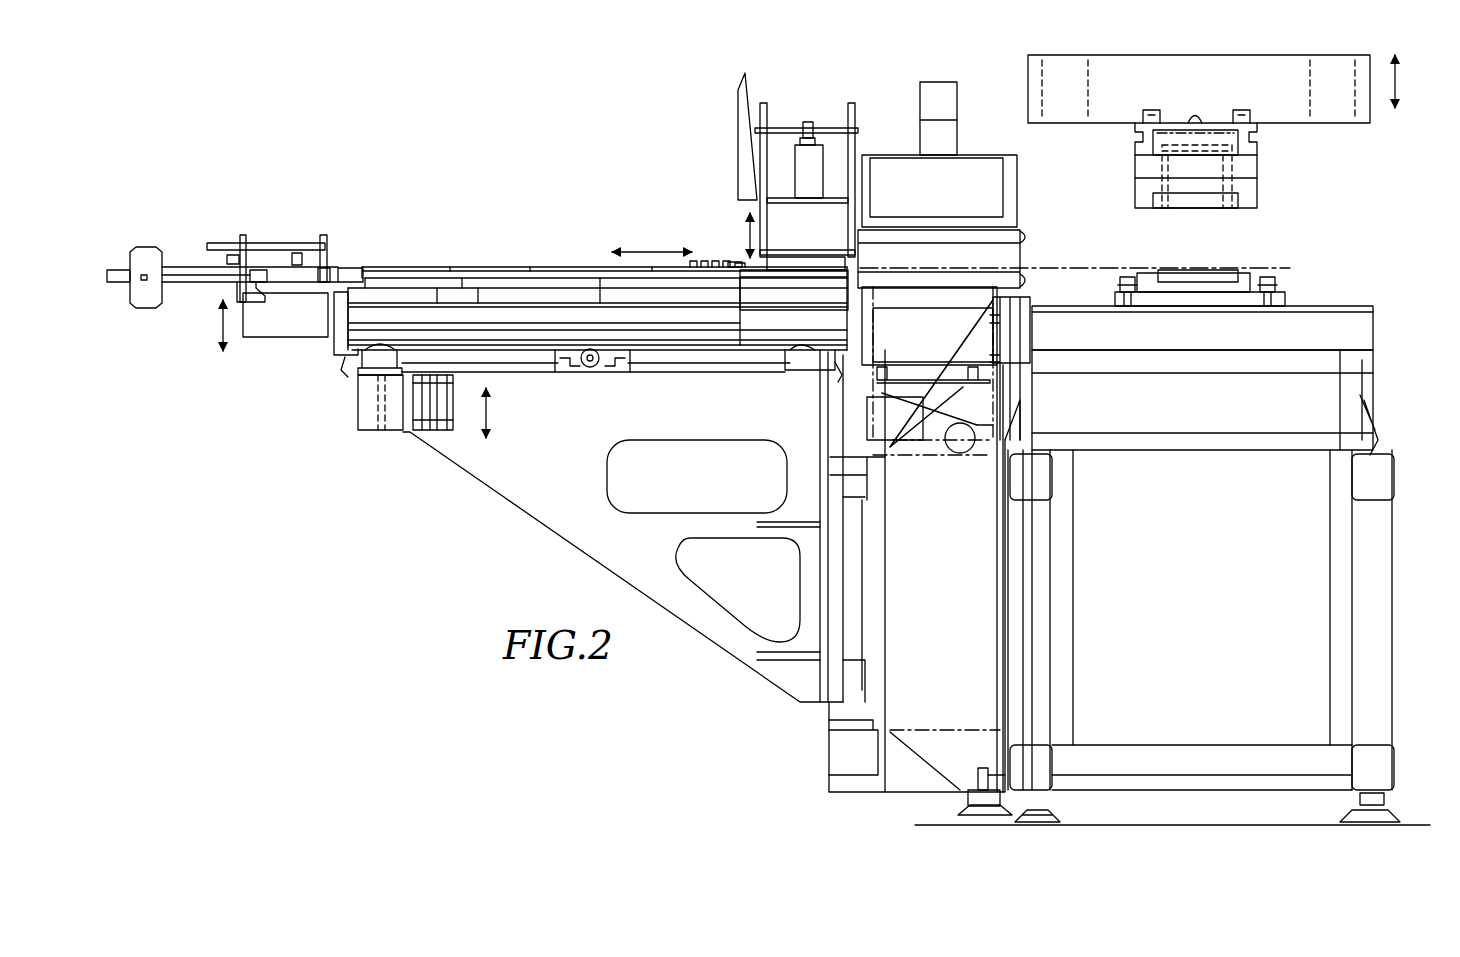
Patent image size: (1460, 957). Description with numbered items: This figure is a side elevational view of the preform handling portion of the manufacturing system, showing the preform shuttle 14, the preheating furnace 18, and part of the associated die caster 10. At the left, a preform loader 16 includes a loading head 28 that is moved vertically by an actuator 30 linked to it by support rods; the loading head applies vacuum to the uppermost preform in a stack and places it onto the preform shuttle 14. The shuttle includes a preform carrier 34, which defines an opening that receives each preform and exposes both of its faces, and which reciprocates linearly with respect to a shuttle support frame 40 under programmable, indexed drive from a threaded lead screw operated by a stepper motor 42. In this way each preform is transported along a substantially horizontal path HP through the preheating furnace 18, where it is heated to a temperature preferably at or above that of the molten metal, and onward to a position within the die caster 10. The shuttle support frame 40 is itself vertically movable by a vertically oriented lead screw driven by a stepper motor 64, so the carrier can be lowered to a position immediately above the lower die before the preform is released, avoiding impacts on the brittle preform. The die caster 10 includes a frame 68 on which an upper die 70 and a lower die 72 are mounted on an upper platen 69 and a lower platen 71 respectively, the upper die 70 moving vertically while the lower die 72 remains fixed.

The die caster 10 is at (1400, 155).
The preform shuttle 14 is at (378, 260).
The preform loader 16 is at (735, 118).
The preheating furnace 18 is at (890, 148).
The loading head 28 is at (786, 250).
The actuator 30 is at (793, 150).
The preform carrier 34 is at (720, 256).
The shuttle support frame 40 is at (513, 472).
The stepper motor 42 is at (284, 332).
The stepper motor 64 is at (830, 748).
The frame 68 is at (1388, 560).
The upper platen 69 is at (1287, 120).
The upper die 70 is at (1255, 189).
The lower platen 71 is at (1375, 324).
The lower die 72 is at (1252, 275).
The horizontal path HP is at (1190, 268).